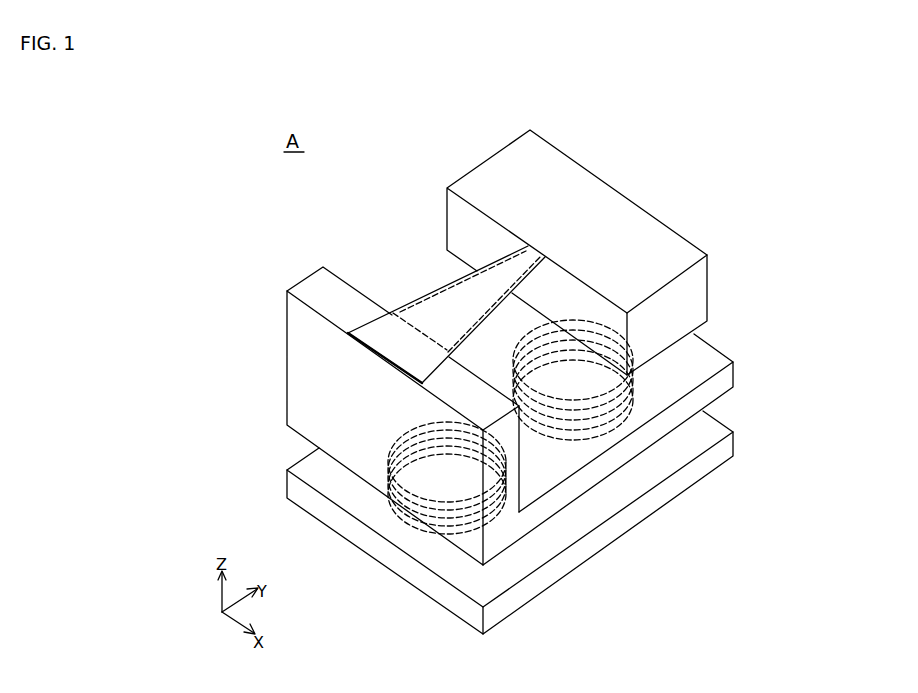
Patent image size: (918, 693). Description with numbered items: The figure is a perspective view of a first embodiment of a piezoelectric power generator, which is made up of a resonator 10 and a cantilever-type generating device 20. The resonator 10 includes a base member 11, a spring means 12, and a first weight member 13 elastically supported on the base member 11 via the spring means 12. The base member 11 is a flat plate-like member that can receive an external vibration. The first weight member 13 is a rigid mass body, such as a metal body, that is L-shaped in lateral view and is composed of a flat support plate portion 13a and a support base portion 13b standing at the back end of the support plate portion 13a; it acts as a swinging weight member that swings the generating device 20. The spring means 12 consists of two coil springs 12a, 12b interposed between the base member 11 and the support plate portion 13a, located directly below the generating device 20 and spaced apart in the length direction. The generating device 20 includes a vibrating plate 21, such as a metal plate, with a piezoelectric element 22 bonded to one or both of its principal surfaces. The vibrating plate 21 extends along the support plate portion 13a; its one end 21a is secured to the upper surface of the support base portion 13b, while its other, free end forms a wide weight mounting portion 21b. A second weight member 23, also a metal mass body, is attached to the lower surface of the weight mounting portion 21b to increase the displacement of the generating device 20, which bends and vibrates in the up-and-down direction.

The resonator 10 is at (757, 568).
The base member 11 is at (727, 447).
The spring means 12 is at (657, 570).
The coil spring 12a is at (470, 514).
The coil spring 12b is at (620, 432).
The first weight member 13 is at (727, 377).
The support plate portion 13a is at (697, 350).
The support base portion 13b is at (303, 339).
The cantilever-type generating device 20 is at (408, 187).
The vibrating plate 21 is at (424, 307).
The one end of the vibrating plate 21a is at (388, 343).
The weight mounting portion 21b is at (587, 187).
The piezoelectric element 22 is at (446, 287).
The second weight member 23 is at (472, 230).